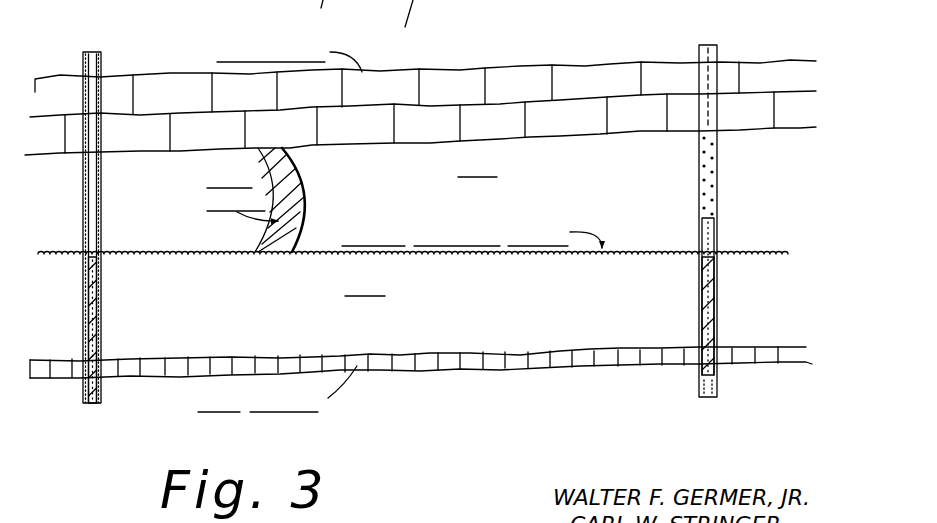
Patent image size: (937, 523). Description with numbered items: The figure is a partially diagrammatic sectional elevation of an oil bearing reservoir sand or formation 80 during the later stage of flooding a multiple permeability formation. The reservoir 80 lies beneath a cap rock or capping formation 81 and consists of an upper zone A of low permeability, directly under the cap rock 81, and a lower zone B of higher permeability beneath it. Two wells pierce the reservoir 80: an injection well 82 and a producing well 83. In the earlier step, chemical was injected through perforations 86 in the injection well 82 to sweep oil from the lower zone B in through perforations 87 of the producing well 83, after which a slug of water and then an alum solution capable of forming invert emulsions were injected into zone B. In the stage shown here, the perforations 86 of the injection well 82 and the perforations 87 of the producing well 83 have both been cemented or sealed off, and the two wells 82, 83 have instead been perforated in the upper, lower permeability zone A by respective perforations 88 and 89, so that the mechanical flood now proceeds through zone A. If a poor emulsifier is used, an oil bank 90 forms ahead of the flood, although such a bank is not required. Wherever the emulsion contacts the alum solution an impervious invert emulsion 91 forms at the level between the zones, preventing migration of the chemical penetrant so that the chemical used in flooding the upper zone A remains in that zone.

The oil bearing reservoir sand or formation 80 is at (808, 240).
The cap rock 81 is at (594, 82).
The injection well 82 is at (83, 182).
The producing well 83 is at (718, 225).
The perforations 86 is at (86, 298).
The perforations 87 is at (701, 297).
The perforations 88 is at (101, 198).
The perforations 89 is at (704, 190).
The oil bank 90 is at (303, 195).
The impervious invert emulsion 91 is at (638, 250).